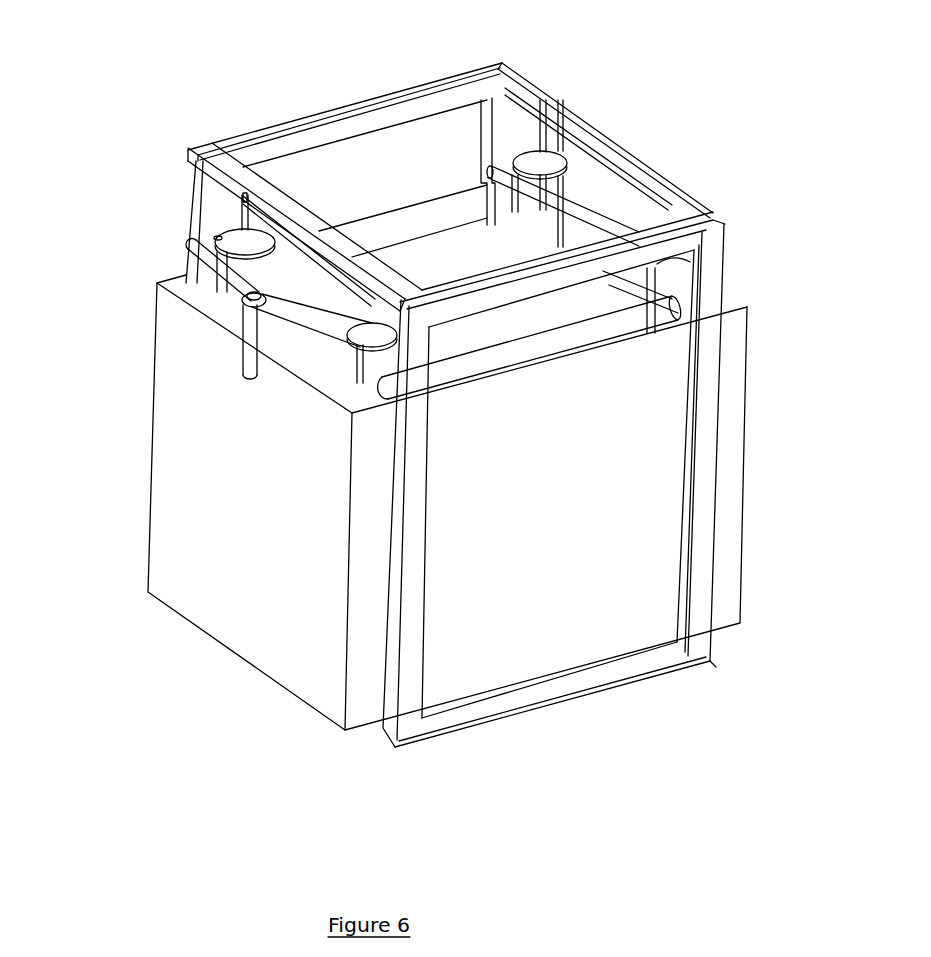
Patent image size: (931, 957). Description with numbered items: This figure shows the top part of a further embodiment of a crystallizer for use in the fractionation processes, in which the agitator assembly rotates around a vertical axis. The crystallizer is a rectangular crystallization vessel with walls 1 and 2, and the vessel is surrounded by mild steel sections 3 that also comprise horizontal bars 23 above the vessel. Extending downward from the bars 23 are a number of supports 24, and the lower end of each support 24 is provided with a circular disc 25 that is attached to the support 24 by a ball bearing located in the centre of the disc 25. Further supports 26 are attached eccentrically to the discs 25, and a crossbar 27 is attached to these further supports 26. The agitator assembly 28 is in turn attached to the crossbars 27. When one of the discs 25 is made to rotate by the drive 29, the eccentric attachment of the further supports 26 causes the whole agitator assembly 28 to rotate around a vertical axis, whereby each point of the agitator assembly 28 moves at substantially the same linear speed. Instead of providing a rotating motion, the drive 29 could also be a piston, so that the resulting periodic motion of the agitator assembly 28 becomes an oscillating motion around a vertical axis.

The wall 1 is at (607, 620).
The wall 2 is at (240, 567).
The mild steel sections 3 is at (407, 688).
The horizontal bars 23 is at (610, 150).
The supports 24 is at (233, 223).
The circular disc 25 is at (485, 125).
The further supports 26 is at (353, 353).
The crossbar 27 is at (232, 272).
The agitator assembly 28 is at (537, 317).
The drive 29 is at (240, 362).